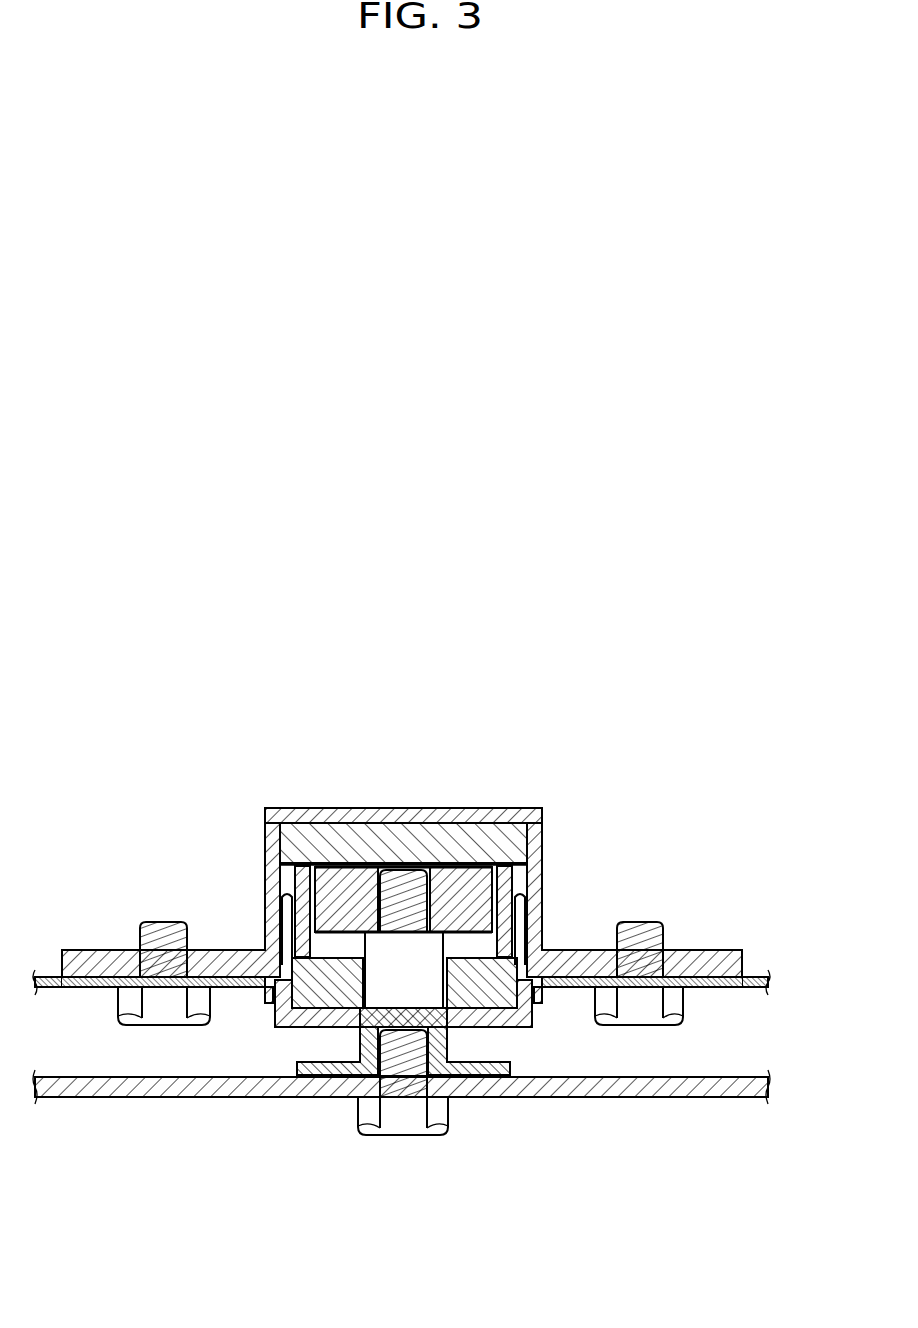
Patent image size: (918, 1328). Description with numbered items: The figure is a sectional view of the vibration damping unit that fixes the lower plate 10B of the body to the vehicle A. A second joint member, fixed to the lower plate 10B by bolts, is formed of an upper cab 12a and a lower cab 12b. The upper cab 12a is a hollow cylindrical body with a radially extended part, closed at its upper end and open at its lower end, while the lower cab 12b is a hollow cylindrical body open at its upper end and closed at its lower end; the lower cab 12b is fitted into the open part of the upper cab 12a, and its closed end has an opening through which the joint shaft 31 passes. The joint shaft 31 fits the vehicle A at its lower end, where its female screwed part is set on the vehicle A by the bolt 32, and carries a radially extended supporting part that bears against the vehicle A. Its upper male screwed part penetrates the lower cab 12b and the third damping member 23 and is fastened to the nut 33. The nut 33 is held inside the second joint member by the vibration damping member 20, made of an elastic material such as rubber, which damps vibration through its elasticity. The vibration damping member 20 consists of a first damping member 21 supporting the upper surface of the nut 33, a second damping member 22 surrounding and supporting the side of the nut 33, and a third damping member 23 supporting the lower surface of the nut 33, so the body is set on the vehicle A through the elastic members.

The upper cab 12a is at (407, 810).
The lower cab 12b is at (277, 1012).
The vibration damping member 20 is at (284, 843).
The first damping member 21 is at (297, 840).
The second damping member 22 is at (300, 880).
The third damping member 23 is at (331, 909).
The nut 33 is at (477, 882).
The joint shaft 31 is at (447, 1040).
The bolt 32 is at (403, 1115).
The lower plate 10B is at (762, 977).
The vehicle A is at (673, 1097).